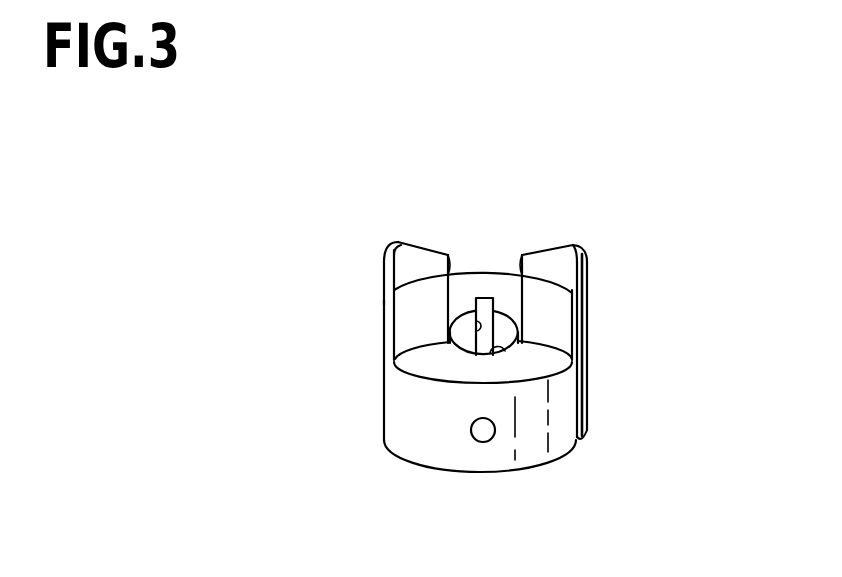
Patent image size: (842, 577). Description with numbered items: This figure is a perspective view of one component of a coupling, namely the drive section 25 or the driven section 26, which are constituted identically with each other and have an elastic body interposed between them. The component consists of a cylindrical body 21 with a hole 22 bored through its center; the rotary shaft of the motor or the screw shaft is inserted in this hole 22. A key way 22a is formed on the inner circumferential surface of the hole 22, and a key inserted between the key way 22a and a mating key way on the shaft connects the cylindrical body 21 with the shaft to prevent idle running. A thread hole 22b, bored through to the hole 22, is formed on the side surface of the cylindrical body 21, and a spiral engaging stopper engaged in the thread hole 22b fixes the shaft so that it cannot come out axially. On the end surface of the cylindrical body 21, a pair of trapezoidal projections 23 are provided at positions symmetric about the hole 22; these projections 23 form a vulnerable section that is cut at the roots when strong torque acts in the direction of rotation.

The cylindrical body 21 is at (557, 420).
The hole 22 is at (497, 342).
The key way 22a is at (483, 332).
The thread hole 22b is at (490, 441).
The projections 23 is at (413, 258).
The drive section 25 is at (672, 346).
The driven section 26 is at (592, 372).